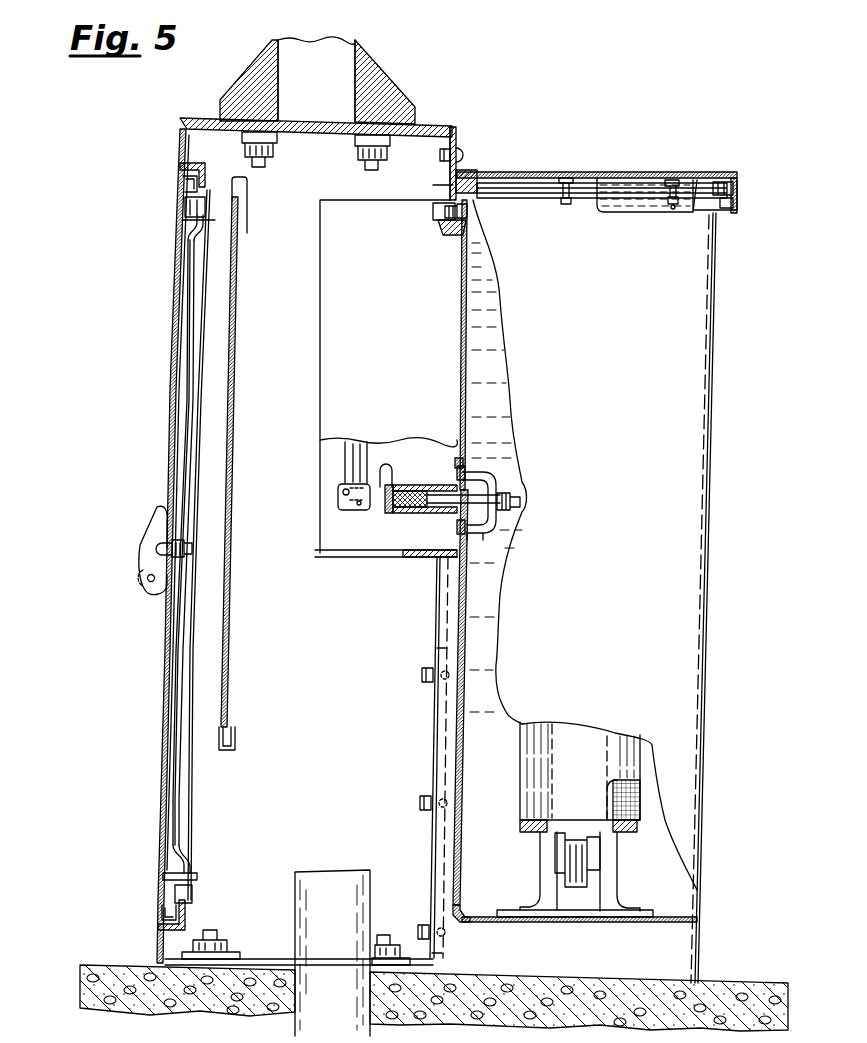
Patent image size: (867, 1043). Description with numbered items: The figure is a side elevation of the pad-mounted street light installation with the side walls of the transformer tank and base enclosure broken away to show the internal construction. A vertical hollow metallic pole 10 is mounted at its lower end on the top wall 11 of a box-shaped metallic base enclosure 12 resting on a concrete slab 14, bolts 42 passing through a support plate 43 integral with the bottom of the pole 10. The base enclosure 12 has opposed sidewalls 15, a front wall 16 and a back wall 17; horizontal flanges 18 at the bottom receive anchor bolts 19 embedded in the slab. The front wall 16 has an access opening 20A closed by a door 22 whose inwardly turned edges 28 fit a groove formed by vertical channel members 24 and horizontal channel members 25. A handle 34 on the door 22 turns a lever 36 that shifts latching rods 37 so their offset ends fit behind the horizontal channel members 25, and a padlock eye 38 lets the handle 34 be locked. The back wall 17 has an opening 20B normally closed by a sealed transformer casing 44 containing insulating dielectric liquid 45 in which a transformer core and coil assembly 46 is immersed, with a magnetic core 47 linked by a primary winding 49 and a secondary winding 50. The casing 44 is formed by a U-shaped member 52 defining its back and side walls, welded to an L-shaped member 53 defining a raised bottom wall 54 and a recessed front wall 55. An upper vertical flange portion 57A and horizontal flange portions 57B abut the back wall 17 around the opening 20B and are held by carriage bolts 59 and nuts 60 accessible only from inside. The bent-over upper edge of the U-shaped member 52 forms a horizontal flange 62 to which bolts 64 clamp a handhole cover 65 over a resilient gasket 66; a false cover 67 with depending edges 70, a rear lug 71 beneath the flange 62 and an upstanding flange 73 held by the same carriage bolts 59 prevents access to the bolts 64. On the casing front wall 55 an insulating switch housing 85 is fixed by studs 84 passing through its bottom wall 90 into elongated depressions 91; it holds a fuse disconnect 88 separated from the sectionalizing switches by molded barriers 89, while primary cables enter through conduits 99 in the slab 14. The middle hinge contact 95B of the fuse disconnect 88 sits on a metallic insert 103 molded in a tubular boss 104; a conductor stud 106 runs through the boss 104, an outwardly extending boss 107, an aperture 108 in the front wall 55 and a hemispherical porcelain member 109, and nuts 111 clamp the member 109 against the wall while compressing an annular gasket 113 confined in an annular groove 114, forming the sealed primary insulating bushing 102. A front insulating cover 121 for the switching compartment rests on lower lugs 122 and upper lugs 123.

The pole 10 is at (274, 42).
The top wall 11 is at (200, 118).
The base enclosure 12 is at (157, 440).
The concrete slab 14 is at (95, 994).
The sidewalls 15 is at (324, 762).
The front wall 16 is at (180, 141).
The back wall 17 is at (448, 143).
The horizontal flanges 18 is at (256, 963).
The anchor bolts 19 is at (221, 935).
The access opening 20A is at (185, 207).
The opening 20B is at (453, 185).
The door 22 is at (172, 378).
The vertical channel members 24 is at (202, 394).
The horizontal channel members 25 is at (203, 176).
The inwardly turned edges 28 is at (182, 183).
The handle 34 is at (146, 528).
The lever 36 is at (186, 530).
The latching rods 37 is at (188, 270).
The padlock eye 38 is at (162, 587).
The bolts 42 is at (370, 165).
The support plate 43 is at (231, 99).
The transformer casing 44 is at (728, 460).
The insulating dielectric liquid 45 is at (504, 380).
The transformer core and coil assembly 46 is at (509, 756).
The magnetic core 47 is at (577, 870).
The primary winding 49 is at (613, 782).
The secondary winding 50 is at (637, 804).
The U-shaped member 52 is at (613, 617).
The L-shaped member 53 is at (475, 896).
The bottom wall 54 is at (487, 923).
The front wall 55 is at (478, 316).
The upper vertically extending flange portion 57A is at (457, 127).
The horizontally extending flange portions 57B is at (452, 840).
The carriage bolts 59 is at (465, 157).
The nuts 60 is at (444, 160).
The horizontal flange 62 is at (527, 193).
The bolts 64 is at (567, 199).
The handhole cover 65 is at (519, 181).
The resilient gasket 66 is at (547, 183).
The false cover 67 is at (582, 173).
The depending edges 70 is at (738, 195).
The lug 71 is at (721, 211).
The upstanding flange 73 is at (464, 152).
The studs 84 is at (450, 218).
The insulating switch housing 85 is at (307, 361).
The fuse disconnect 88 is at (355, 442).
The barriers 89 is at (330, 458).
The bottom wall 90 is at (460, 456).
The elongated depressions 91 is at (437, 207).
The middle hinge contact 95B is at (342, 510).
The conduits 99 is at (340, 906).
The primary insulating bushing 102 is at (501, 538).
The metallic insert 103 is at (392, 487).
The tubular boss 104 is at (420, 485).
The conductor stud 106 is at (430, 506).
The outwardly extending boss 107 is at (480, 536).
The aperture 108 is at (480, 472).
The hemispherical member 109 is at (496, 478).
The nuts 111 is at (521, 500).
The annular resilient gasket 113 is at (470, 478).
The annular groove 114 is at (457, 528).
The front insulating cover 121 is at (231, 578).
The lower lugs 122 is at (236, 737).
The upper lugs 123 is at (247, 195).